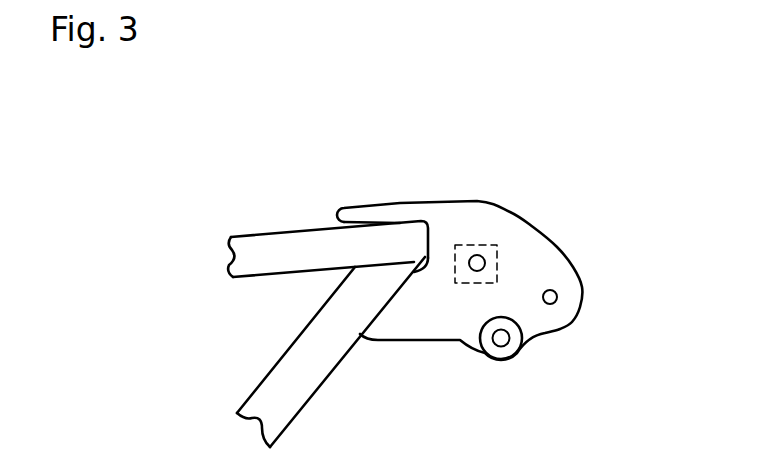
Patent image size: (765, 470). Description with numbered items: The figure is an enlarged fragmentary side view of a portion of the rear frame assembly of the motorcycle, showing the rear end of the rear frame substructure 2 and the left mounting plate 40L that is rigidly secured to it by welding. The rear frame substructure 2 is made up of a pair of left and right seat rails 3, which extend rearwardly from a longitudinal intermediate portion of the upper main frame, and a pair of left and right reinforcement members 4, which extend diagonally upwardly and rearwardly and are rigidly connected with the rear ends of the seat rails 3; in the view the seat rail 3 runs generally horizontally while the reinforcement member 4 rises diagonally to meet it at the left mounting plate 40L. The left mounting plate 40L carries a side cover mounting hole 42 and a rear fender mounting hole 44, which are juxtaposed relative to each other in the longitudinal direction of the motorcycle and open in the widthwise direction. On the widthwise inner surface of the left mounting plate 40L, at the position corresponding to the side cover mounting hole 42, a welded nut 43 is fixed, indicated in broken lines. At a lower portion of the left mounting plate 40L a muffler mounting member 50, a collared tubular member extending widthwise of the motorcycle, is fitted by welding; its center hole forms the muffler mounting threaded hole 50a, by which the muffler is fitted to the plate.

The rear frame substructure 2 is at (355, 115).
The seat rail 3 is at (283, 243).
The reinforcement member 4 is at (342, 315).
The left mounting plate 40L is at (466, 210).
The side cover mounting hole 42 is at (488, 264).
The welded nut 43 is at (473, 243).
The rear fender mounting hole 44 is at (557, 295).
The muffler mounting member 50 is at (478, 350).
The muffler mounting threaded hole 50a is at (508, 346).